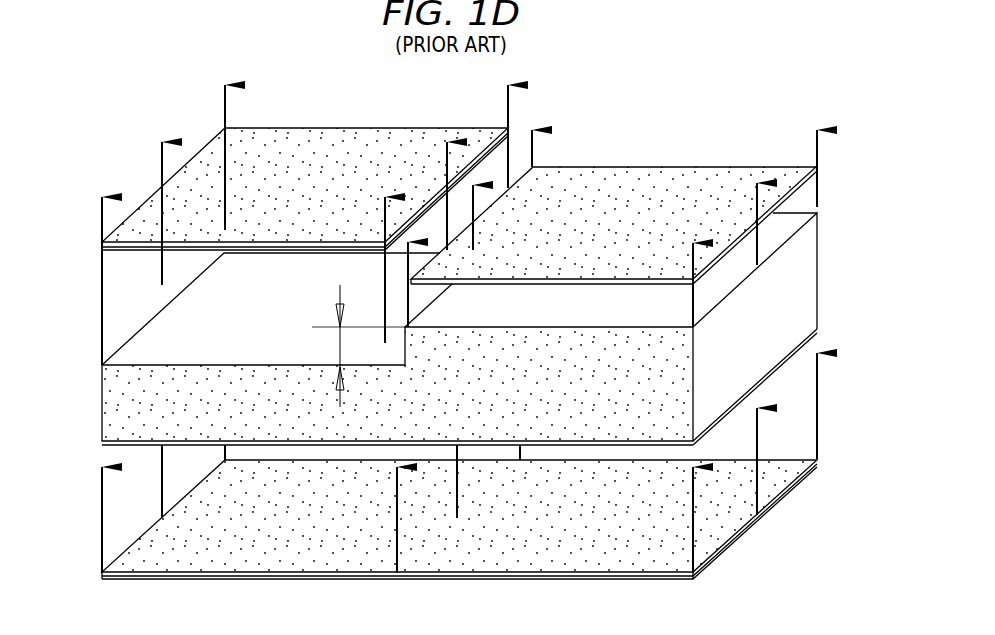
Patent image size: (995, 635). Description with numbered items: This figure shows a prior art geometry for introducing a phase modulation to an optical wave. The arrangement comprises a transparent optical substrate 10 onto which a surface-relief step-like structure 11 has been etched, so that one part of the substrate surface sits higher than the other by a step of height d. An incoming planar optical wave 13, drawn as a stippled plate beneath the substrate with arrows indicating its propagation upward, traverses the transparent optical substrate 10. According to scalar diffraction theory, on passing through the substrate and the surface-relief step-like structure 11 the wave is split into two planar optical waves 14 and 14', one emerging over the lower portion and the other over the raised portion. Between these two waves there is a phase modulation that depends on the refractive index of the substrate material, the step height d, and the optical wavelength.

The transparent optical substrate 10 is at (808, 280).
The surface-relief step-like structure 11 is at (148, 347).
The incoming planar optical wave 13 is at (723, 518).
The planar optical wave 14 is at (305, 165).
The planar optical wave 14' is at (613, 184).
The height of the surface-relief step d is at (340, 350).